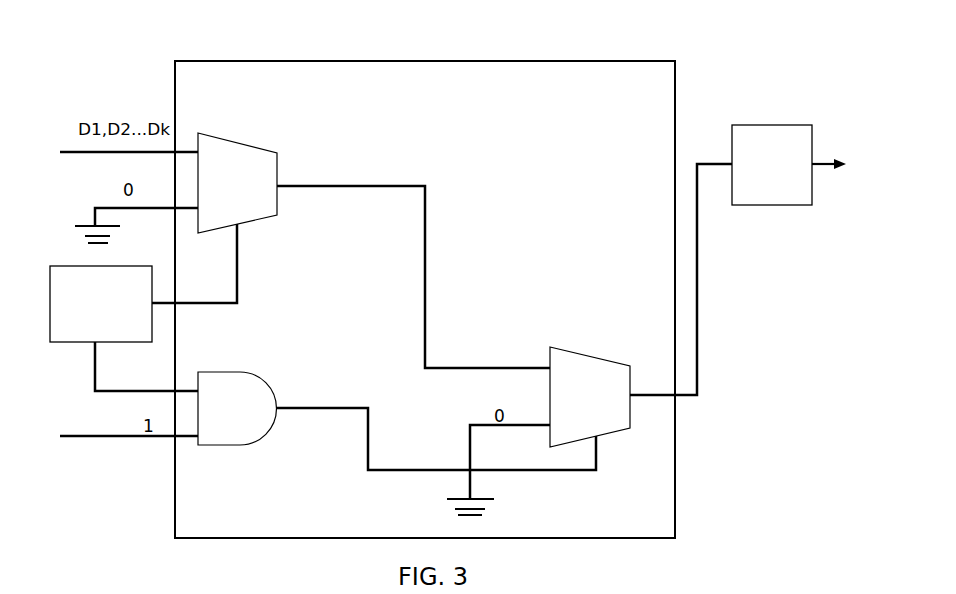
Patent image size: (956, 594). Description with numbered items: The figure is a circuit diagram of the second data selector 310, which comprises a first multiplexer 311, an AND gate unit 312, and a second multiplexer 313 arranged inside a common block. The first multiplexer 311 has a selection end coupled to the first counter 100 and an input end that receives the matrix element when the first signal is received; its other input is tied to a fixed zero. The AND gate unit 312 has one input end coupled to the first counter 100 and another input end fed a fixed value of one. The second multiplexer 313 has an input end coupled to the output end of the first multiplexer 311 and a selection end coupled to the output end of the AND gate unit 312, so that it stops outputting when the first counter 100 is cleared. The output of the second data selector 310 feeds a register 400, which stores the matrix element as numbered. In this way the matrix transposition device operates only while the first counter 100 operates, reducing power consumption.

The second data selector 310 is at (426, 61).
The first multiplexer 311 is at (237, 143).
The AND gate unit 312 is at (237, 447).
The second multiplexer 313 is at (588, 356).
The first counter 100 is at (62, 343).
The register 400 is at (772, 125).